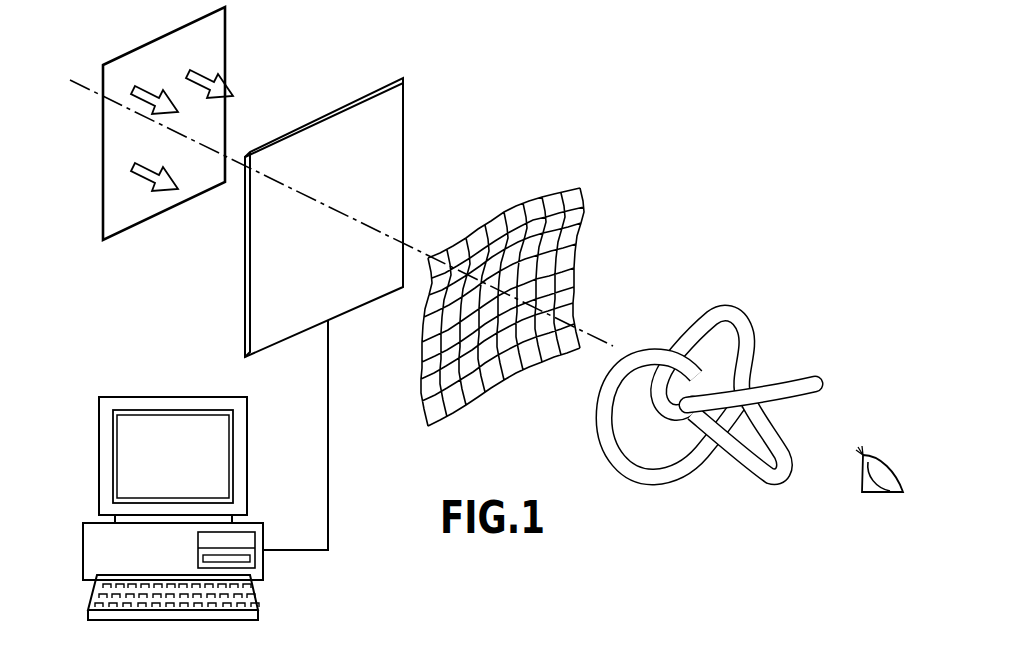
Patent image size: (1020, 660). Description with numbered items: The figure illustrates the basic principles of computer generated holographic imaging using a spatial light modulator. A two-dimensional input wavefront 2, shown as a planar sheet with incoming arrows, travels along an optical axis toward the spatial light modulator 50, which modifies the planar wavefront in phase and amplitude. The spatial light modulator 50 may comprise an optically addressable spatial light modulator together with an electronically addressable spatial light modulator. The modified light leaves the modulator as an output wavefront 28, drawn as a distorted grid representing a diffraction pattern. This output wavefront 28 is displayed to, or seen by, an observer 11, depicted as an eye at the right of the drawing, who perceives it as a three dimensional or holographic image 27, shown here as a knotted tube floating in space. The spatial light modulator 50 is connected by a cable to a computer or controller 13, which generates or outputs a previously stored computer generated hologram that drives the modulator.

The two-dimensional input wavefront 2 is at (225, 47).
The spatial light modulator 50 is at (403, 108).
The output wavefront 28 is at (579, 194).
The three dimensional or holographic image 27 is at (720, 306).
The observer 11 is at (889, 460).
The computer or controller 13 is at (173, 396).